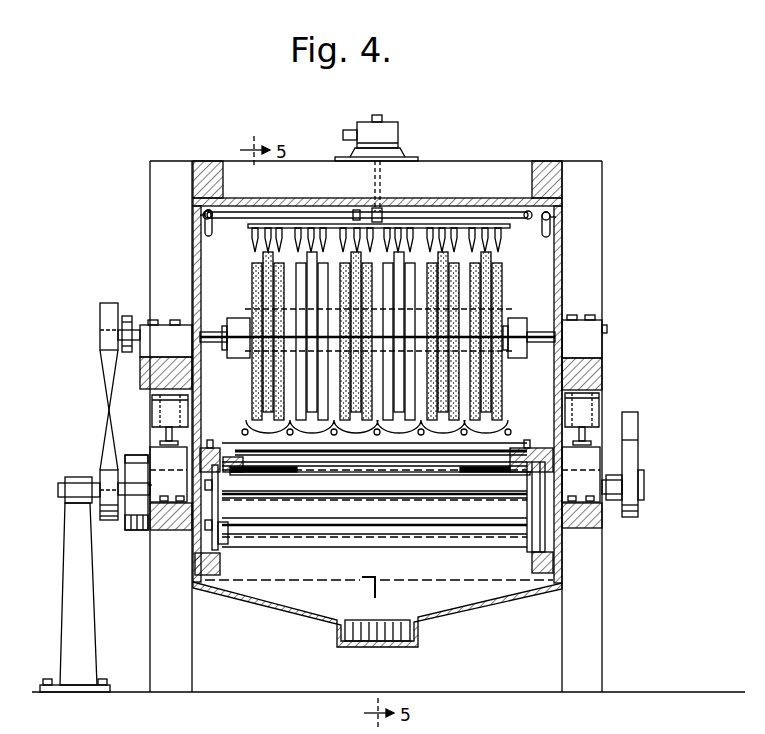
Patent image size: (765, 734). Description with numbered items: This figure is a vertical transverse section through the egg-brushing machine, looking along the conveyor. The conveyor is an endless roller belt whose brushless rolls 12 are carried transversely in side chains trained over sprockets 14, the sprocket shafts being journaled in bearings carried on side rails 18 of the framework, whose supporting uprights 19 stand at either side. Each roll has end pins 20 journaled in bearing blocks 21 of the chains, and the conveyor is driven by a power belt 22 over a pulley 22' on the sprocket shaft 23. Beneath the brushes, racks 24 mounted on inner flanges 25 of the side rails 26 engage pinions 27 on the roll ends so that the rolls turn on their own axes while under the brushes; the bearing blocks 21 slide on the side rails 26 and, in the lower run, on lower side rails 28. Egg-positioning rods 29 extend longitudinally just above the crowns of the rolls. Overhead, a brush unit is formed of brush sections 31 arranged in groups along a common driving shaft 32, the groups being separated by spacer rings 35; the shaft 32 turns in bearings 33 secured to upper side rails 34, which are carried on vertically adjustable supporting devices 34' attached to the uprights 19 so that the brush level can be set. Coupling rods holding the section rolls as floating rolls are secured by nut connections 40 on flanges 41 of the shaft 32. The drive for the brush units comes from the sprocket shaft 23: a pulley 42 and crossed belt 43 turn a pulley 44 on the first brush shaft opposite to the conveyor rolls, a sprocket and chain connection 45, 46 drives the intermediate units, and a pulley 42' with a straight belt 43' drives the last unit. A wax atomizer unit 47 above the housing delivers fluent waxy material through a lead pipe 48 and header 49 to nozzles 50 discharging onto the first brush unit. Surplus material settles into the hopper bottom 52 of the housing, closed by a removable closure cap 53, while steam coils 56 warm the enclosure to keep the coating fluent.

The brushless rolls 12 is at (346, 455).
The sprockets 14 is at (222, 510).
The side rails 18 is at (170, 520).
The supporting uprights 19 is at (152, 611).
The pins 20 is at (206, 446).
The bearing blocks 21 is at (210, 440).
The power belt 22 is at (355, 438).
The pulley 22' is at (125, 503).
The sprocket shaft 23 is at (396, 500).
The racks 24 is at (250, 470).
The inner flanges 25 is at (282, 472).
The side rails 26 is at (185, 470).
The pinions 27 is at (230, 455).
The lower side rails 28 is at (222, 565).
The rods 29 is at (411, 446).
The brush sections 31 is at (256, 277).
The driving shaft 32 is at (208, 332).
The bearings 33 is at (158, 326).
The upper side rails 34 is at (378, 387).
The vertically adjustable supporting devices 34' is at (381, 406).
The spacer rings 35 is at (402, 300).
The nut connections 40 is at (516, 318).
The flanges 41 is at (520, 332).
The pulley 42 is at (104, 489).
The pulley 42' is at (643, 478).
The crossed belt 43 is at (94, 410).
The straight belt 43' is at (663, 459).
The pulley 44 is at (102, 340).
The sprocket and chain connection 45 is at (130, 315).
The sprocket and chain connection 46 is at (126, 353).
The wax atomizer unit 47 is at (398, 125).
The lead pipe 48 is at (385, 212).
The header 49 is at (440, 226).
The nozzles 50 is at (500, 246).
The hopper bottom 52 is at (470, 600).
The removable closure cap 53 is at (418, 645).
The steam coils 56 is at (500, 212).